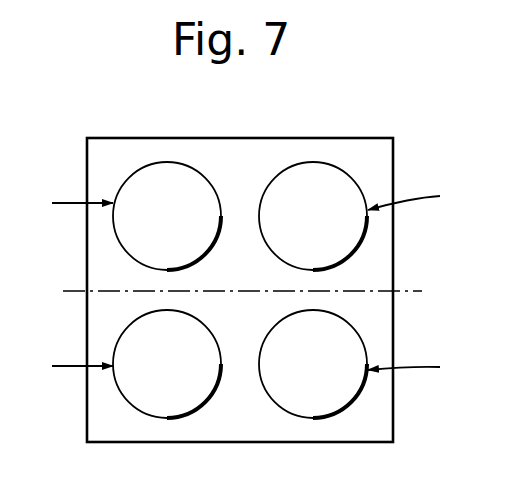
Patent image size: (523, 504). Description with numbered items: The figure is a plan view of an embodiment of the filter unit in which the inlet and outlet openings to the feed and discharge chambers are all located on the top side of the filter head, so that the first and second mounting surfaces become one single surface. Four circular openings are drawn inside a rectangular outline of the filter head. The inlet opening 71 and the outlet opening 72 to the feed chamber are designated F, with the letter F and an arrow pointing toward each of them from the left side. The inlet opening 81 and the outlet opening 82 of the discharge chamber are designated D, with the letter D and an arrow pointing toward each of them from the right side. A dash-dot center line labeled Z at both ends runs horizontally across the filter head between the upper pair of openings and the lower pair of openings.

The inlet opening 71 is at (165, 183).
The inlet opening 81 is at (310, 186).
The outlet opening 72 is at (164, 398).
The outlet opening 82 is at (318, 398).
The feed chamber designation F is at (74, 284).
The discharge chamber designation D is at (411, 285).
The axis / center line Z is at (76, 292).